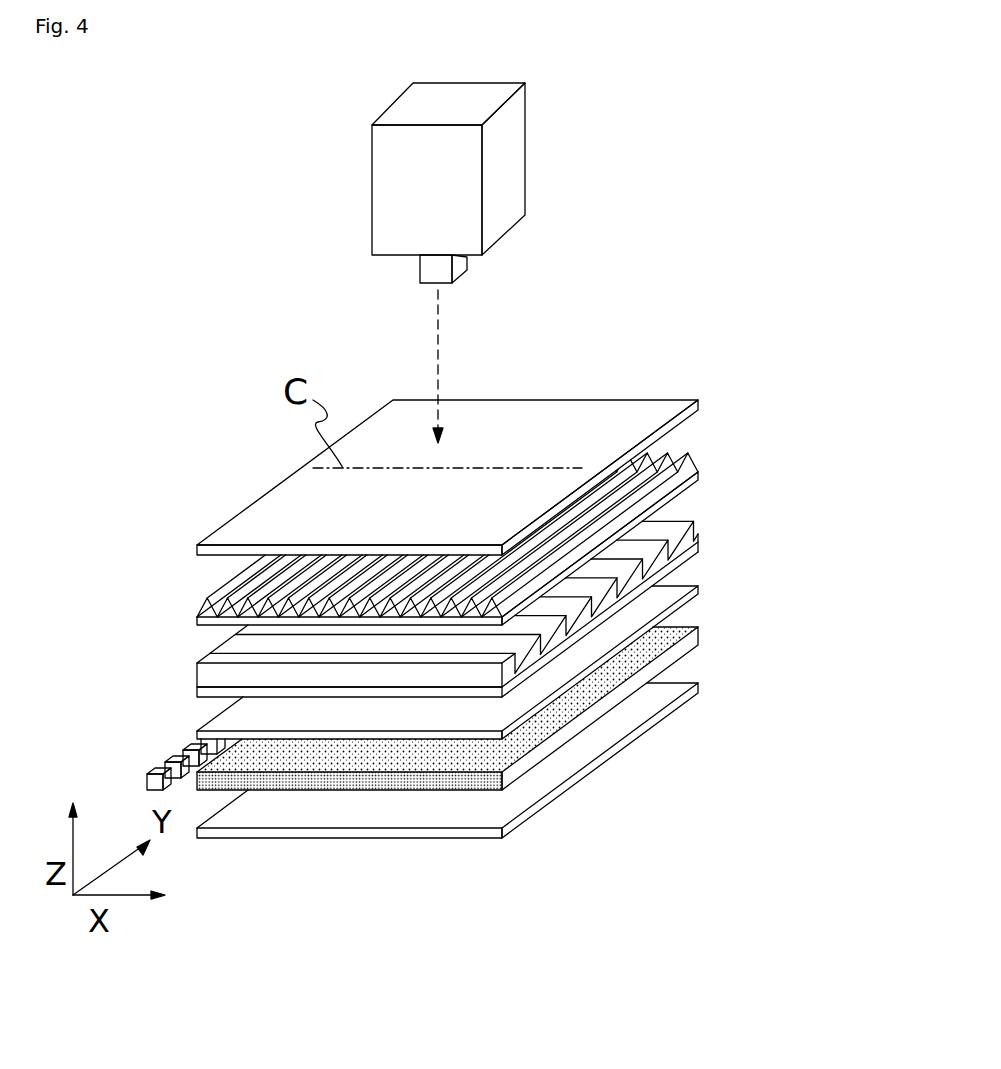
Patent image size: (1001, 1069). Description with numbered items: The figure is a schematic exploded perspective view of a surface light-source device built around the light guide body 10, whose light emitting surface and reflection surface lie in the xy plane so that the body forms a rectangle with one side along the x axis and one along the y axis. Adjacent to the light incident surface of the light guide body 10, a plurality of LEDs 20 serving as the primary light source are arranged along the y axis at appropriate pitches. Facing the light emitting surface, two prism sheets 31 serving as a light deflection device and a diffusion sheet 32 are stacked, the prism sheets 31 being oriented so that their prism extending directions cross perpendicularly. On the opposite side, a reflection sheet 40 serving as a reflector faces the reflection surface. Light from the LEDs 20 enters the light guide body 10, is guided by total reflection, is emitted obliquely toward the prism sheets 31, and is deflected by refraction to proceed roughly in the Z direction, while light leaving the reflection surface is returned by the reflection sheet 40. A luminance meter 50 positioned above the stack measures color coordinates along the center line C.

The light guide body 10 is at (694, 639).
The LEDs 20 is at (163, 757).
The prism sheets 31 is at (713, 440).
The diffusion sheet 32 is at (202, 727).
The reflection sheet 40 is at (565, 783).
The camera / luminance measuring device 50 is at (507, 172).